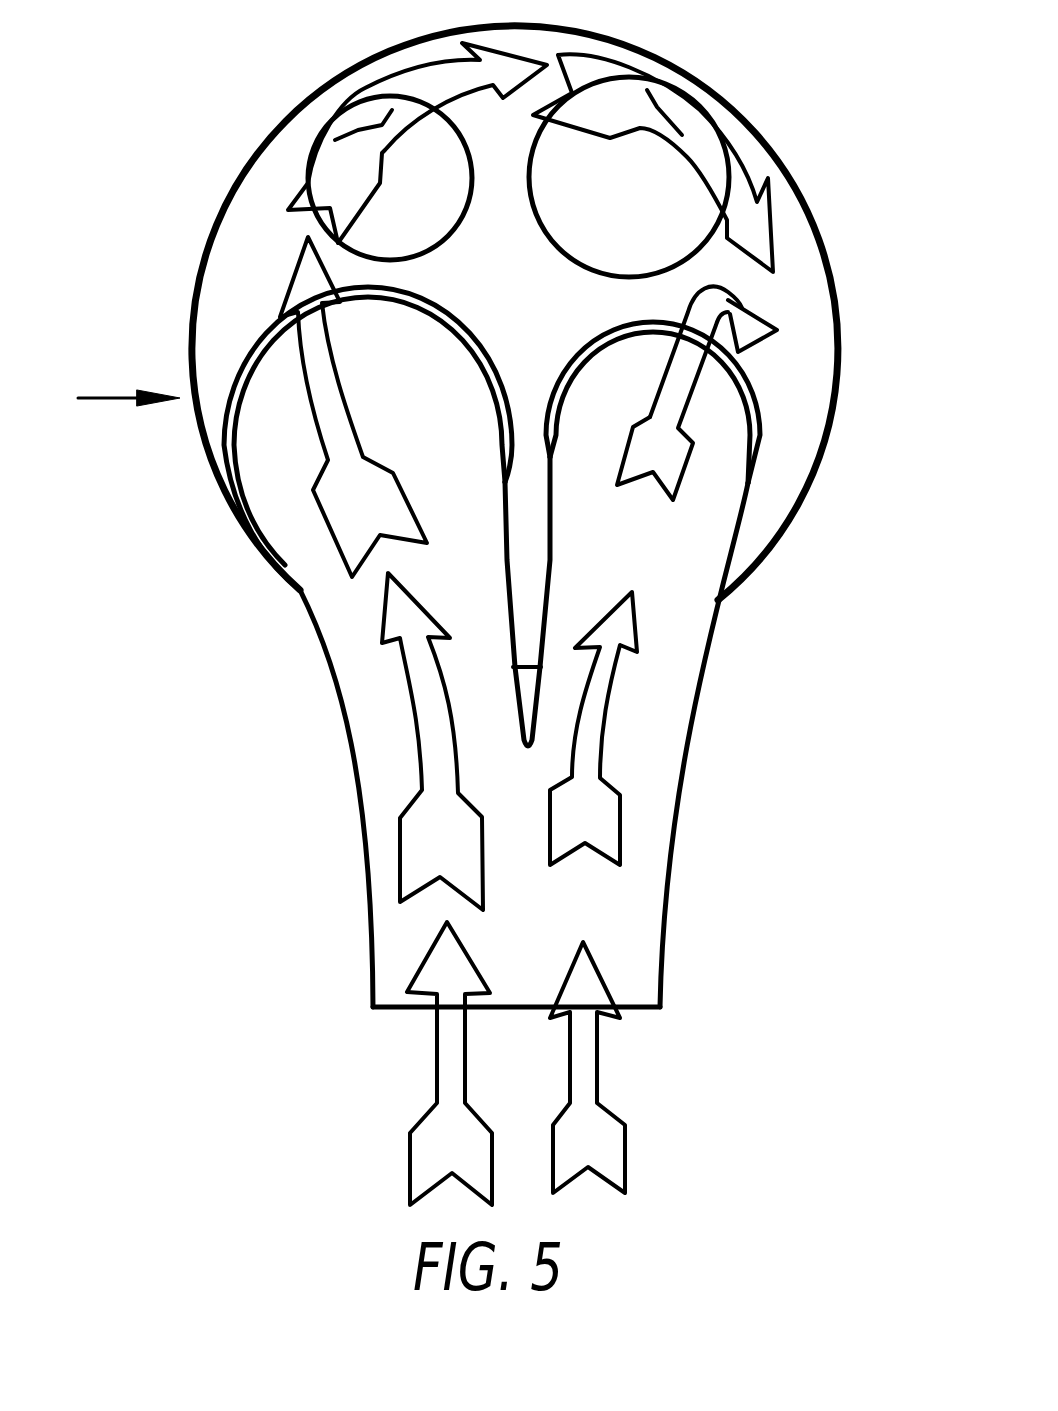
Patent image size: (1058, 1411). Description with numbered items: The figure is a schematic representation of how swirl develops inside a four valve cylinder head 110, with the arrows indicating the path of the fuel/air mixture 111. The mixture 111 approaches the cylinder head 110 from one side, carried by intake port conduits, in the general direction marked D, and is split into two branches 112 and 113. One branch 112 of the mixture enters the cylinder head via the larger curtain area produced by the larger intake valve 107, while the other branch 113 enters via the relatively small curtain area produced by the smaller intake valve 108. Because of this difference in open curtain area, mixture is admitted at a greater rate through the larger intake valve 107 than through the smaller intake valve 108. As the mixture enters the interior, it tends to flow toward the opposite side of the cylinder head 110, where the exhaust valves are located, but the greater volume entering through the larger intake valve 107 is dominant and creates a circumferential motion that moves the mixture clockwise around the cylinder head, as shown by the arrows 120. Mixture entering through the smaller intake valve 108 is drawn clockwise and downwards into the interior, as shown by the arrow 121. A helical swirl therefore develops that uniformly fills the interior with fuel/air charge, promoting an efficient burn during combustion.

The larger intake valve 107 is at (217, 473).
The smaller intake valve 108 is at (760, 417).
The cylinder head 110 is at (822, 233).
The fuel/air mixture 111 is at (613, 907).
The first branch of mixture 112 is at (352, 625).
The second branch of mixture 113 is at (668, 587).
The arrows indicating clockwise circumferential motion 120 is at (390, 118).
The arrow indicating downward clockwise flow 121 is at (752, 315).
The direction of flow D is at (113, 398).